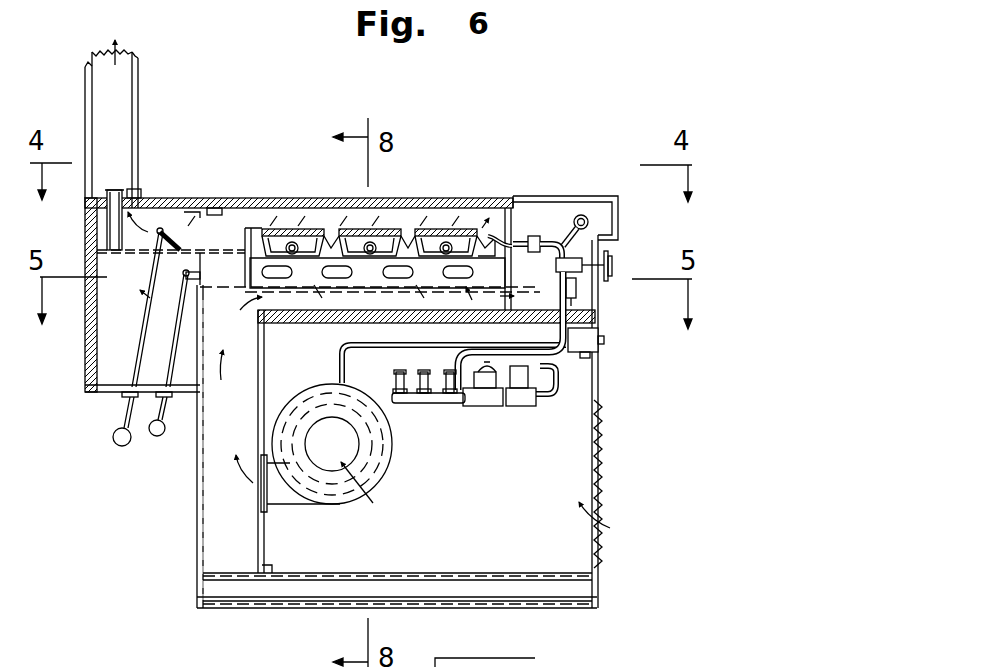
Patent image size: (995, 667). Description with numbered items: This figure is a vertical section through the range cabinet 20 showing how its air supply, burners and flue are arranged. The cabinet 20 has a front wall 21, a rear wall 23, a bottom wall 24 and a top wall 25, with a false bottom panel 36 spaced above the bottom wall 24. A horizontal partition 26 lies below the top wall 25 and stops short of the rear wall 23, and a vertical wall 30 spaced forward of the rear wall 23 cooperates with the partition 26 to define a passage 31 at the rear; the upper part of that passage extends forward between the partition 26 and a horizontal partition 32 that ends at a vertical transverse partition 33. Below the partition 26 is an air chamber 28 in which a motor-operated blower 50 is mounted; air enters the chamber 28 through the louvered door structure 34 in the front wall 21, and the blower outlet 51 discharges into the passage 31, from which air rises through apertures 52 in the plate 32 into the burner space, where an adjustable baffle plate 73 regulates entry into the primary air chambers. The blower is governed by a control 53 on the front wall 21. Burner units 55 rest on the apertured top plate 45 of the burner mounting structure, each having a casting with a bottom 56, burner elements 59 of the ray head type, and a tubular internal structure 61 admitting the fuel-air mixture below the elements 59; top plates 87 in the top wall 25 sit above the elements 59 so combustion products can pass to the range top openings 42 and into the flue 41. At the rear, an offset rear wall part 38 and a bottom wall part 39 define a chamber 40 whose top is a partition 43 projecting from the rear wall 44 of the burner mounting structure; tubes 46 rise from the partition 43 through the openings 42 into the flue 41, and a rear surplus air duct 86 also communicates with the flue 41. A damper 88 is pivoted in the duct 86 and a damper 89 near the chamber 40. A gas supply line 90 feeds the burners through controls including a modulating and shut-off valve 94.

The range cabinet 20 is at (186, 525).
The front wall 21 is at (600, 595).
The rear wall 23 is at (197, 480).
The bottom wall 24 is at (258, 606).
The top wall 25 is at (560, 197).
The horizontal partition 26 is at (306, 312).
The air chamber 28 is at (475, 519).
The vertical wall 30 is at (263, 540).
The passage 31 is at (240, 429).
The horizontal partition 32 is at (238, 311).
The vertical transverse partition 33 is at (522, 216).
The louvered door structure 34 is at (601, 447).
The false bottom panel 36 is at (516, 548).
The upper rearwardly offset rear wall part 38 is at (86, 340).
The horizontal bottom wall part 39 is at (106, 393).
The chamber 40 is at (135, 356).
The flue 41 is at (140, 100).
The range top openings 42 is at (141, 196).
The partition 43 is at (138, 252).
The rear wall of burner mounting structure 44 is at (250, 262).
The apertured top plate 45 is at (252, 234).
The tubes 46 is at (105, 216).
The motor-operated blower 50 is at (392, 463).
The blower outlet 51 is at (302, 506).
The apertures 52 is at (327, 284).
The control 53 is at (600, 350).
The burner 55 is at (393, 224).
The bottom 56 is at (318, 229).
The burner elements 59 is at (293, 229).
The tubular internal structure 61 is at (470, 234).
The adjustable baffle plate 73 is at (305, 277).
The rear surplus air duct 86 is at (206, 216).
The top plates 87 is at (447, 199).
The damper 88 is at (212, 207).
The damper 89 is at (148, 320).
The gas supply line 90 is at (588, 215).
The modulating and shut-off valve 94 is at (614, 262).